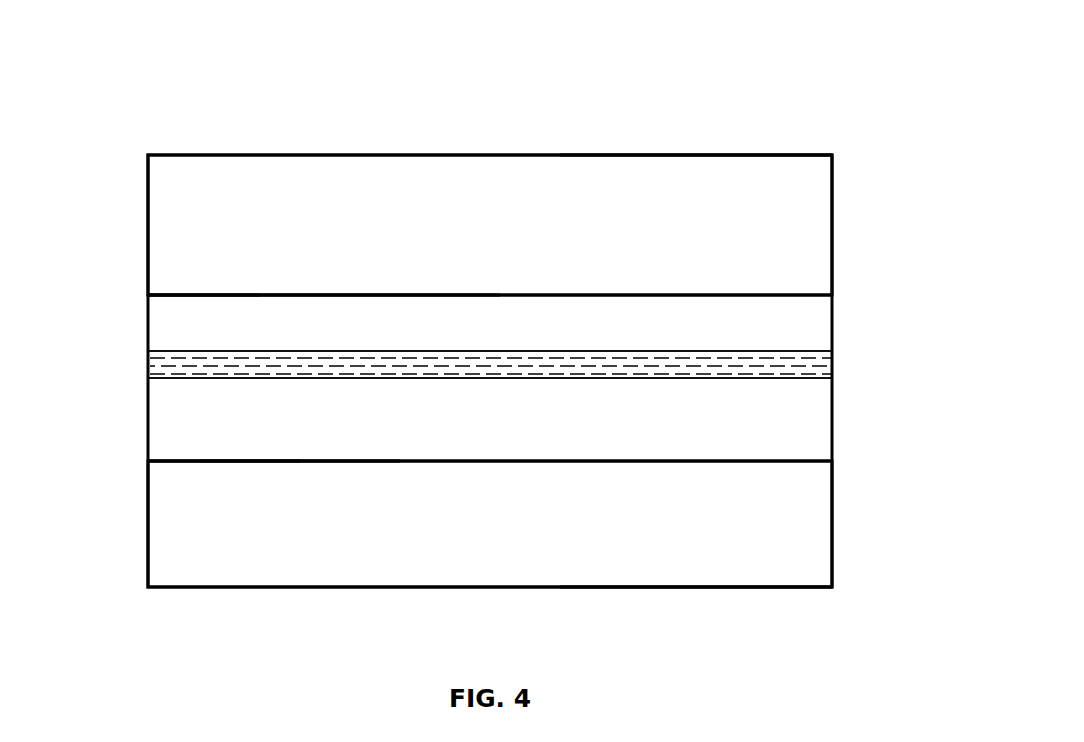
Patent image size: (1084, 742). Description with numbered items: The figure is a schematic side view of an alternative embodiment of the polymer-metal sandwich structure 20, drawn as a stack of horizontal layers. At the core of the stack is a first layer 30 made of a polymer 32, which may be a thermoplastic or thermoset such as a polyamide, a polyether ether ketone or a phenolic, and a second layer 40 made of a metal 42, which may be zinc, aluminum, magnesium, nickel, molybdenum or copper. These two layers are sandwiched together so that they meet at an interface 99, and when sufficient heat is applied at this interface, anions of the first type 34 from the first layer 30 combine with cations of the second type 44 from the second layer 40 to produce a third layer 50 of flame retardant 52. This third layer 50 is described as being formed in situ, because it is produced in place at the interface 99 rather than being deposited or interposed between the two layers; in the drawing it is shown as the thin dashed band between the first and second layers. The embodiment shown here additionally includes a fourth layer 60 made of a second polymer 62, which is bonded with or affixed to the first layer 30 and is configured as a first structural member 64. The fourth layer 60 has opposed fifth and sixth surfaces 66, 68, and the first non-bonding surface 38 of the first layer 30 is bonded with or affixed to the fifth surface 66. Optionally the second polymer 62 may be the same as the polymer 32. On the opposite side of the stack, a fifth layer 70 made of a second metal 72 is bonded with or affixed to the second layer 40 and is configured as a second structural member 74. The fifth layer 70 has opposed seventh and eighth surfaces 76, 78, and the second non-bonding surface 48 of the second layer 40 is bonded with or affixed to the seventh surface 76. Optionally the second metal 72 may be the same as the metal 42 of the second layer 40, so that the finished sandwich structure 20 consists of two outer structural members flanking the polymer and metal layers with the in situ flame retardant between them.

The polymer-metal sandwich structure 20 is at (172, 87).
The first layer 30 is at (552, 419).
The polymer 32 is at (552, 419).
The anions of the first type 34 is at (503, 430).
The first non-bonding surface 38 is at (270, 462).
The second layer 40 is at (552, 323).
The metal 42 is at (552, 323).
The cations of the second type 44 is at (503, 332).
The second non-bonding surface 48 is at (310, 295).
The third layer 50 is at (499, 363).
The flame retardant 52 is at (499, 363).
The interface 99 is at (170, 364).
The fourth layer 60 is at (532, 524).
The second polymer 62 is at (522, 533).
The first structural member 64 is at (532, 524).
The fifth surface 66 is at (212, 461).
The sixth surface 68 is at (697, 587).
The fifth layer 70 is at (532, 225).
The second metal 72 is at (522, 233).
The second structural member 74 is at (532, 225).
The seventh surface 76 is at (208, 295).
The eighth surface 78 is at (702, 156).